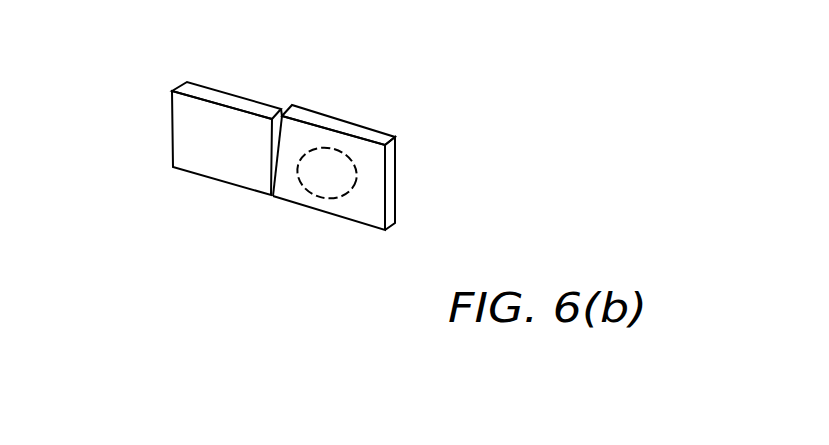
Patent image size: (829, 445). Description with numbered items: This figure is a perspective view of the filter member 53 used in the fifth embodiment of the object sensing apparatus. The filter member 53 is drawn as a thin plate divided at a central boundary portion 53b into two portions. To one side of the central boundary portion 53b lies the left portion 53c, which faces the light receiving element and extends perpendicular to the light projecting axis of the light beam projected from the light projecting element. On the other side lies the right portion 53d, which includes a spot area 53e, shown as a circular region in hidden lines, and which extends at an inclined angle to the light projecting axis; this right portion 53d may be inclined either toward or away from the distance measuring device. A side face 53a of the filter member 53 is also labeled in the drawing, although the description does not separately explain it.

The filter member 53 is at (157, 119).
The side face of block 53a is at (398, 180).
The central boundary portion 53b is at (280, 109).
The left portion 53c is at (222, 163).
The right portion 53d is at (355, 212).
The spot area 53e is at (305, 192).